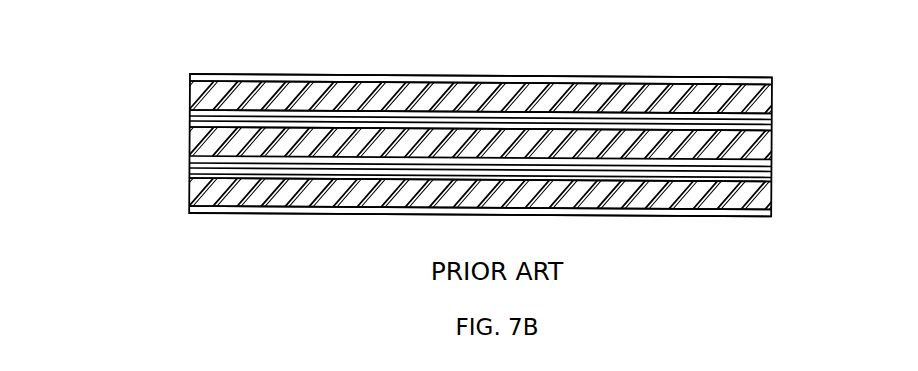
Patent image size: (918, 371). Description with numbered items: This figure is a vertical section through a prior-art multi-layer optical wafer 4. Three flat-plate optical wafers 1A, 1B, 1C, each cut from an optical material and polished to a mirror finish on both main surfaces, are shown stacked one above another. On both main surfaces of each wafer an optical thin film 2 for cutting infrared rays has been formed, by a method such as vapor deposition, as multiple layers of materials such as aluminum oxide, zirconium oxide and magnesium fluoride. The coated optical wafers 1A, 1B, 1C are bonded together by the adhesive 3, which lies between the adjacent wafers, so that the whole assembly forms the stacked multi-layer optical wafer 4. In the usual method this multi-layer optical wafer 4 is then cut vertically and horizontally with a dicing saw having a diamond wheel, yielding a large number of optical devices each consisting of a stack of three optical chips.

The optical thin film 2 is at (732, 69).
The optical wafer 1A is at (787, 98).
The optical wafer 1B is at (784, 144).
The optical wafer 1C is at (784, 198).
The adhesive 3 is at (178, 129).
The multi-layer optical wafer 4 is at (722, 251).